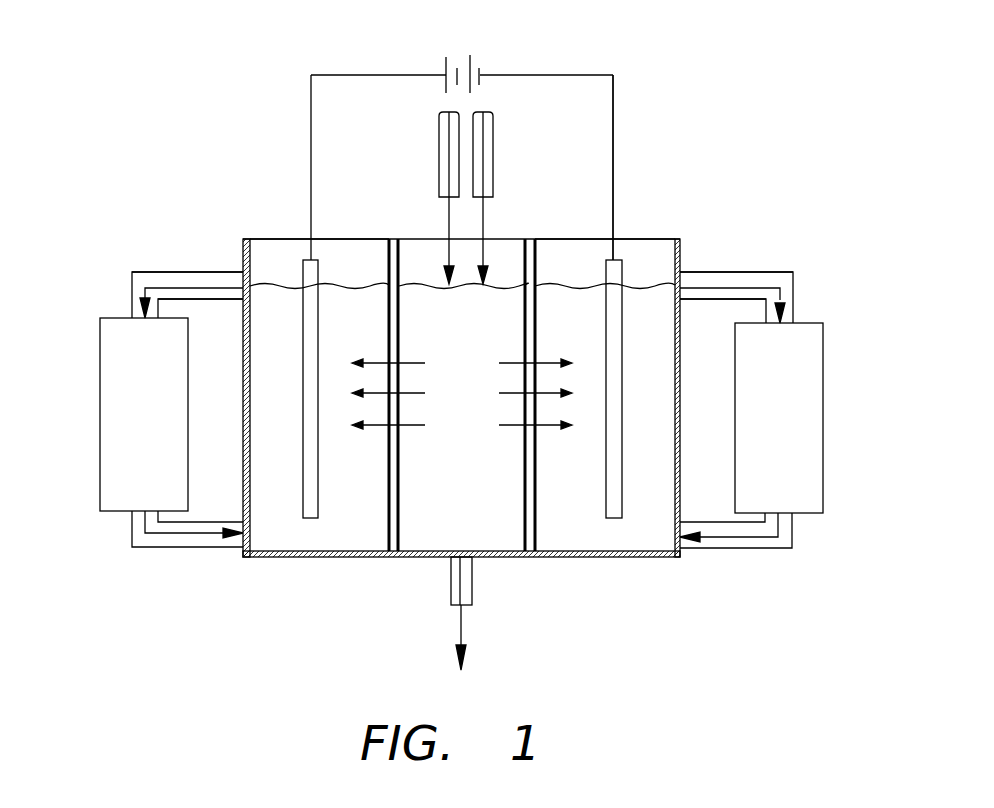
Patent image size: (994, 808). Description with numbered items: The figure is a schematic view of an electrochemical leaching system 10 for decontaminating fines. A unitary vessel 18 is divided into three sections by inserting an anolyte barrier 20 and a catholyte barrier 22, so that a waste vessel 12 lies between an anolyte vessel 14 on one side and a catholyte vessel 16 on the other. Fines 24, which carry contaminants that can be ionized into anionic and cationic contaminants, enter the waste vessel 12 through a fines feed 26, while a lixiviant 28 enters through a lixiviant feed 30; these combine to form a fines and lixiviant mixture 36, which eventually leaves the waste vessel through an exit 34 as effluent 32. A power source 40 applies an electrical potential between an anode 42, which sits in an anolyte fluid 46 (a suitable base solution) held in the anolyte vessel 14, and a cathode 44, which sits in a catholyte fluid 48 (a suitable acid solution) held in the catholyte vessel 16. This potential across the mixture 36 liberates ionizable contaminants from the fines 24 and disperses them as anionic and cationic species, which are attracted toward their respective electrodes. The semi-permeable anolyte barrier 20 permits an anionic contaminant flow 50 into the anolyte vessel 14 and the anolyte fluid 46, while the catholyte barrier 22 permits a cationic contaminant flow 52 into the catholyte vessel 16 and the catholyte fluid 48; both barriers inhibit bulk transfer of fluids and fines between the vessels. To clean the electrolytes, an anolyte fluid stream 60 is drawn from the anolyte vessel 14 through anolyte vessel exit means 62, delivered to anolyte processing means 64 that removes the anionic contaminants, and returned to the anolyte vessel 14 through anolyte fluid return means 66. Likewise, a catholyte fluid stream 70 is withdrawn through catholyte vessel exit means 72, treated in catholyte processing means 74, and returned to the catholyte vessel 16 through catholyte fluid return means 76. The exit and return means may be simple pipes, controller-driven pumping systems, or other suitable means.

The electrochemical leaching system 10 is at (806, 54).
The waste vessel 12 is at (510, 239).
The anolyte vessel 14 is at (282, 239).
The catholyte vessel 16 is at (646, 239).
The unitary vessel 18 is at (627, 222).
The anolyte barrier 20 is at (389, 522).
The catholyte barrier 22 is at (535, 525).
The fines 24 is at (446, 262).
The fines feed 26 is at (439, 135).
The lixiviant 28 is at (487, 262).
The lixiviant feed 30 is at (493, 135).
The effluent 32 is at (462, 635).
The exit 34 is at (472, 586).
The fines and lixiviant mixture 36 is at (425, 275).
The power source 40 is at (470, 57).
The anode 42 is at (318, 277).
The cathode 44 is at (622, 268).
The anolyte fluid 46 is at (283, 282).
The catholyte fluid 48 is at (586, 287).
The anionic contaminant flow 50 is at (415, 425).
The cationic contaminant flow 52 is at (498, 425).
The anolyte fluid stream 60 is at (158, 288).
The anolyte vessel exit means 62 is at (192, 272).
The anolyte processing means 64 is at (100, 408).
The anolyte fluid return means 66 is at (197, 548).
The catholyte fluid stream 70 is at (760, 290).
The catholyte vessel exit means 72 is at (793, 294).
The catholyte processing means 74 is at (823, 410).
The catholyte fluid return means 76 is at (747, 549).